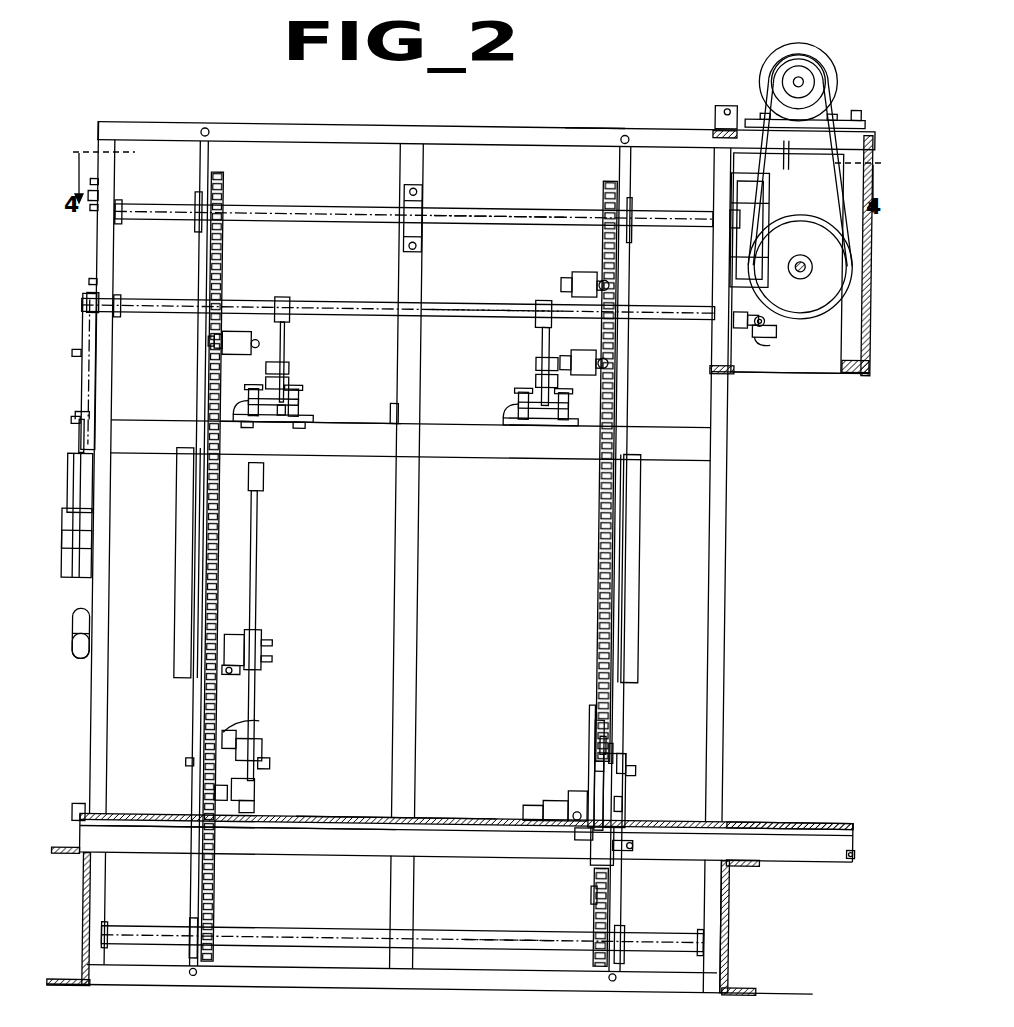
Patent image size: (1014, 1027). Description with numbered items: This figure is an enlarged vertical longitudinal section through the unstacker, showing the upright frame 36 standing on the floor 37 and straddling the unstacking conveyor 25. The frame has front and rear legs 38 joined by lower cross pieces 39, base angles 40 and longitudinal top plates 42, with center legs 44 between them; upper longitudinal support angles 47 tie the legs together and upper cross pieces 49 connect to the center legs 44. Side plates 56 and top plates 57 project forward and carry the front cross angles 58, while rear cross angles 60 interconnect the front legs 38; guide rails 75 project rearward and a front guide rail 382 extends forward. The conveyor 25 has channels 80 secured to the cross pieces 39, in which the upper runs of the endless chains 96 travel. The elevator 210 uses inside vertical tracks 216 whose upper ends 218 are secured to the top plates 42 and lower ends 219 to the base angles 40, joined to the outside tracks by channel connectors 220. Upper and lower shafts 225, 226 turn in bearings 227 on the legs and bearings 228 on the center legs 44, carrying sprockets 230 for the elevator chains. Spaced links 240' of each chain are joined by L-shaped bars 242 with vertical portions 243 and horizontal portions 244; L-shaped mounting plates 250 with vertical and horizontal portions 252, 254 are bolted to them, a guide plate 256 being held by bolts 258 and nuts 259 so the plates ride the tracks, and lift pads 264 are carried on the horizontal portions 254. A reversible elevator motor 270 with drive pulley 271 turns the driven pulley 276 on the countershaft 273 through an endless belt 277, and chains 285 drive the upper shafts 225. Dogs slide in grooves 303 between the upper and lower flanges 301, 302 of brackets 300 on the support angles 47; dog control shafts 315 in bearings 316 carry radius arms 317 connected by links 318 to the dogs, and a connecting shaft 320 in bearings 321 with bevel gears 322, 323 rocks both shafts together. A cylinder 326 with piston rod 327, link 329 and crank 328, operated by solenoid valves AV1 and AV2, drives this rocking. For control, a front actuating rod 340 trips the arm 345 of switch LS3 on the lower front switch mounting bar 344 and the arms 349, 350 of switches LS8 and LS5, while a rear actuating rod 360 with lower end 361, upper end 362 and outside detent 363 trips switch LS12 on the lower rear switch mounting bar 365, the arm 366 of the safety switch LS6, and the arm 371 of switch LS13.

The upright frame 36 is at (140, 120).
The front and rear legs 38 is at (103, 522).
The lower cross pieces 39 is at (92, 888).
The base angles 40 is at (253, 976).
The floor 37 is at (795, 993).
The unstacking conveyor 25 is at (378, 862).
The channels 80 is at (300, 832).
The endless chains 96 is at (384, 812).
The front guide rail 382 is at (795, 822).
The longitudinal guide rails 75 is at (80, 812).
The center legs 44 is at (414, 493).
The upper longitudinal support angles 47 is at (565, 459).
The upper cross pieces 49 is at (383, 416).
The upper ends of inside tracks 218 is at (199, 158).
The elevator 210 is at (229, 171).
The inside vertical tracks 216 is at (204, 558).
The channel connectors 220 is at (180, 490).
The bearings 227 is at (118, 208).
The upper shafts 225 is at (497, 215).
The sprockets 230 is at (226, 196).
The bearings 228 is at (425, 228).
The bearings 316 is at (116, 305).
The dog control shafts 315 is at (472, 311).
The crank 328 is at (98, 291).
The link 329 is at (82, 410).
The piston rod 327 is at (88, 441).
The cylinder 326 is at (86, 477).
The solenoid valve AV1 is at (88, 625).
The solenoid valve AV2 is at (88, 650).
The radius arms 317 is at (284, 328).
The links 318 is at (286, 370).
The switch LS13 is at (266, 347).
The arm 371 is at (229, 341).
The switch LS5 is at (583, 272).
The arm 350 is at (608, 283).
The switch LS8 is at (582, 352).
The arm 349 is at (602, 367).
The upper flanges 301 is at (302, 392).
The brackets 300 is at (306, 408).
The grooves 303 is at (272, 432).
The lower flanges 302 is at (290, 418).
The lower rear switch mounting bar 365 is at (258, 598).
The switch LS12 is at (242, 640).
The outside detent 363 is at (226, 730).
The upper end 362 is at (228, 738).
The rear actuating rod 360 is at (232, 752).
The bolts 258 is at (233, 770).
The nuts 259 is at (190, 763).
The switch LS6 is at (257, 790).
The lower end 361 is at (222, 795).
The arm 366 is at (244, 806).
The front actuating rod 340 is at (589, 722).
The vertical portions 243 is at (599, 760).
The vertical portions 252 is at (616, 783).
The L-shaped bars 242 is at (613, 760).
The L-shaped mounting plates 250 is at (623, 758).
The guide plate 256 is at (623, 805).
The links 240' is at (608, 796).
The horizontal portions 244 is at (600, 858).
The horizontal portions 254 is at (632, 848).
The lift pads 264 is at (578, 830).
The switch LS3 is at (547, 806).
The lower front switch mounting bar 344 is at (527, 812).
The arm 345 is at (582, 811).
The lower ends of inside tracks 219 is at (190, 931).
The lower shafts 226 is at (519, 936).
The reversible elevator motor 270 is at (816, 50).
The drive pulley 271 is at (812, 70).
The endless belt 277 is at (831, 92).
The countershaft 273 is at (808, 258).
The driven pulley 276 is at (820, 310).
The front cross angles 58 is at (870, 130).
The rear cross angles 60 is at (714, 132).
The side plates 56 is at (820, 202).
The top plates 57 is at (783, 141).
The chains 285 is at (740, 184).
The connecting shaft 320 is at (762, 331).
The bearings 321 is at (754, 340).
The bevel gears 322 is at (740, 321).
The bevel gears 323 is at (739, 338).
The top plates 42 is at (585, 135).